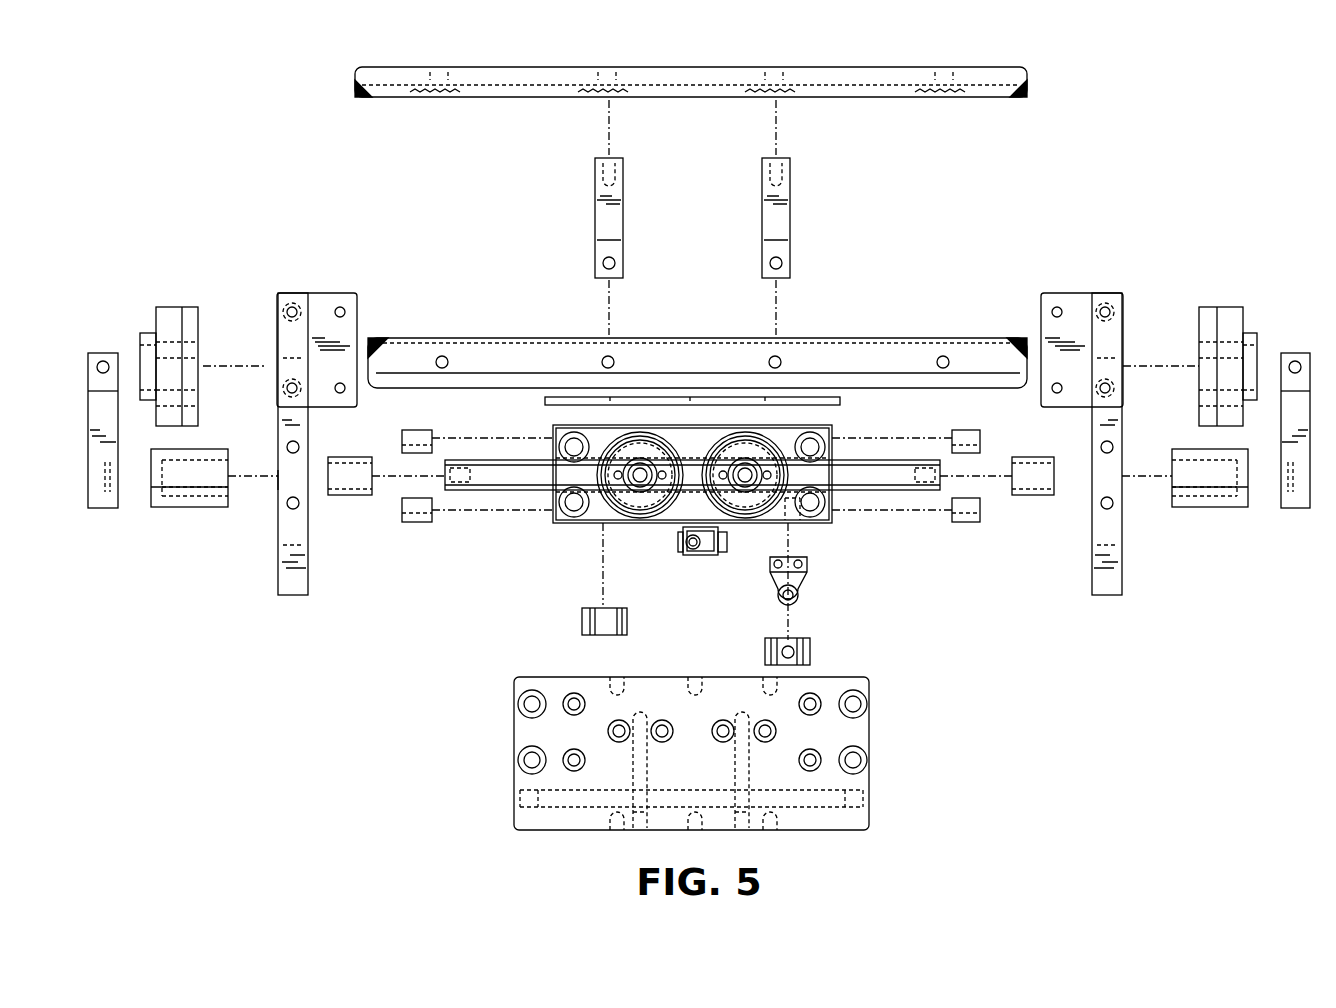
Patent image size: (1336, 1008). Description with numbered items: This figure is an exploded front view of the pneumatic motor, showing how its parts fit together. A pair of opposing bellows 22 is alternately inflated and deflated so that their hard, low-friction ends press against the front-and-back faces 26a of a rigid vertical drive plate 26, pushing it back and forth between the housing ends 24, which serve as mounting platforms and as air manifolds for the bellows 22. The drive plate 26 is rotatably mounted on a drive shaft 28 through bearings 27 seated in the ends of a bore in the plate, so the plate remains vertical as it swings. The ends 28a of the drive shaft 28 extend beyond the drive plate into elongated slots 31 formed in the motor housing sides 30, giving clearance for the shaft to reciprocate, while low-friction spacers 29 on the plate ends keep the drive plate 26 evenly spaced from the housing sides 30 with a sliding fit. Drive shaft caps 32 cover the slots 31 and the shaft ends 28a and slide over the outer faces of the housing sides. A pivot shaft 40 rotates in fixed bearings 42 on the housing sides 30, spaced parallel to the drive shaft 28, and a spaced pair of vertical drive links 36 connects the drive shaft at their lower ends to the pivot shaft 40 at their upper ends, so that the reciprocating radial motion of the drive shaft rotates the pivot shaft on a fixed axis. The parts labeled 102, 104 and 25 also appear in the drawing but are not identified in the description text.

The top bar 102 is at (880, 75).
The mounting blocks 104 is at (600, 216).
The pivot shaft 40 is at (891, 356).
The drive plate 26 is at (595, 517).
The front-and-back faces of the drive plate 26a is at (551, 515).
The bellows 22 is at (645, 510).
The drive shaft 28 is at (497, 478).
The ends of the drive shaft 28a is at (456, 490).
The low-friction spacers 29 is at (418, 430).
The bearings 27 is at (352, 497).
The drive shaft caps 32 is at (190, 510).
The vertical drive links 36 is at (97, 507).
The fixed bearings 42 is at (170, 320).
The corner brackets 25 is at (328, 312).
The motor housing sides 30 is at (293, 590).
The slots 31 is at (278, 480).
The housing ends 24 is at (579, 818).